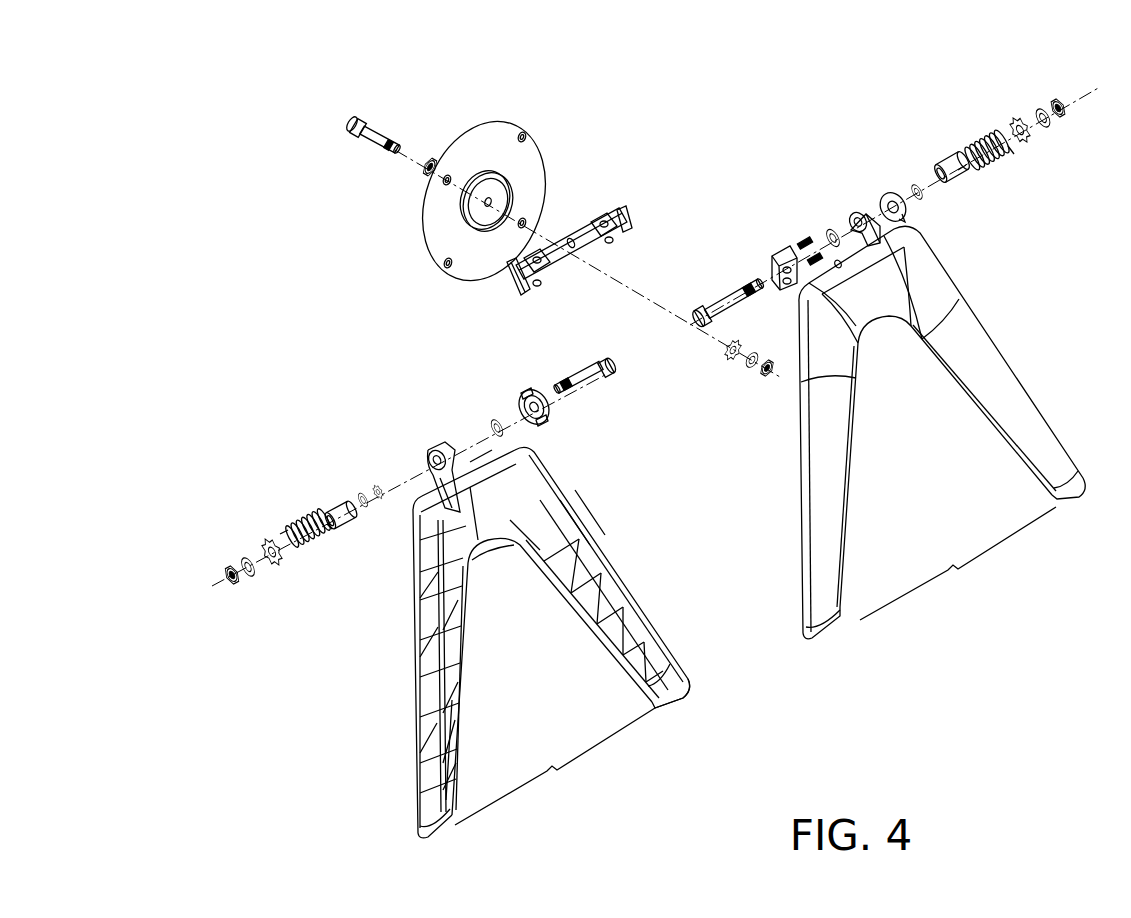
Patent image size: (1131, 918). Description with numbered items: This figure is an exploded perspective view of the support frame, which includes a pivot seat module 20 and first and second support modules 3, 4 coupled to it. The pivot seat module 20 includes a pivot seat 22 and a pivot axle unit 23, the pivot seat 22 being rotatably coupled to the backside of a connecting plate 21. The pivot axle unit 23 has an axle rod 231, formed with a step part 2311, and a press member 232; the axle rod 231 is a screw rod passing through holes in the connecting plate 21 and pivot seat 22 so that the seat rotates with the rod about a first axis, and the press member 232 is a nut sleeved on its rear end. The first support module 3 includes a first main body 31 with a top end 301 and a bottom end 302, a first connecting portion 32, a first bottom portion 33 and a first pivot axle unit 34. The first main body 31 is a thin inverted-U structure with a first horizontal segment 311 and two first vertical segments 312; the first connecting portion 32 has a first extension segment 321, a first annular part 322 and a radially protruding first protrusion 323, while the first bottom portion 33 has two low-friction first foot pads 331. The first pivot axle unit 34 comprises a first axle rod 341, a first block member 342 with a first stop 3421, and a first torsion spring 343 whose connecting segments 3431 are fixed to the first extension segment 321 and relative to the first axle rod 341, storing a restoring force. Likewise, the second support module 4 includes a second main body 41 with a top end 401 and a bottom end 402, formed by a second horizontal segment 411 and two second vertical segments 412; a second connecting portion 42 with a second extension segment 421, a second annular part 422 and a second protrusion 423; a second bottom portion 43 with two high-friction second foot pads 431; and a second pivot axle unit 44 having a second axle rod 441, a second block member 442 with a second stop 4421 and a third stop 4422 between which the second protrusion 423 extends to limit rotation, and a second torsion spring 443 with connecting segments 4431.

The first support module 3 is at (997, 95).
The second support module 4 is at (309, 417).
The pivot seat module 20 is at (618, 181).
The connecting plate 21 is at (536, 148).
The pivot seat 22 is at (631, 216).
The pivot axle unit 23 is at (371, 110).
The axle rod 231 is at (367, 145).
The step part 2311 is at (378, 133).
The press member 232 is at (762, 379).
The first main body 31 is at (1016, 364).
The top end 301 is at (832, 258).
The bottom end 302 is at (1001, 559).
The first horizontal segment 311 is at (873, 324).
The first vertical segments 312 is at (835, 488).
The first connecting portion 32 is at (852, 198).
The first extension segment 321 is at (904, 264).
The first annular part 322 is at (864, 211).
The first protrusion 323 is at (850, 220).
The first bottom portion 33 is at (958, 563).
The first foot pads 331 is at (1070, 487).
The first pivot axle unit 34 is at (949, 201).
The first axle rod 341 is at (720, 296).
The first block member 342 is at (783, 247).
The first stop 3421 is at (787, 242).
The first torsion spring 343 is at (979, 129).
The connecting segments 3431 is at (953, 153).
The second main body 41 is at (618, 566).
The top end 401 is at (474, 455).
The bottom end 402 is at (601, 761).
The second horizontal segment 411 is at (487, 540).
The second vertical segments 412 is at (603, 648).
The second connecting portion 42 is at (432, 434).
The second extension segment 421 is at (427, 483).
The second annular part 422 is at (430, 458).
The second protrusion 423 is at (428, 442).
The second bottom portion 43 is at (555, 766).
The second foot pads 431 is at (668, 691).
The second pivot axle unit 44 is at (554, 371).
The second axle rod 441 is at (588, 389).
The second block member 442 is at (535, 388).
The second stop 4421 is at (523, 399).
The third stop 4422 is at (541, 423).
The second torsion spring 443 is at (306, 513).
The connecting segments 4431 is at (287, 534).